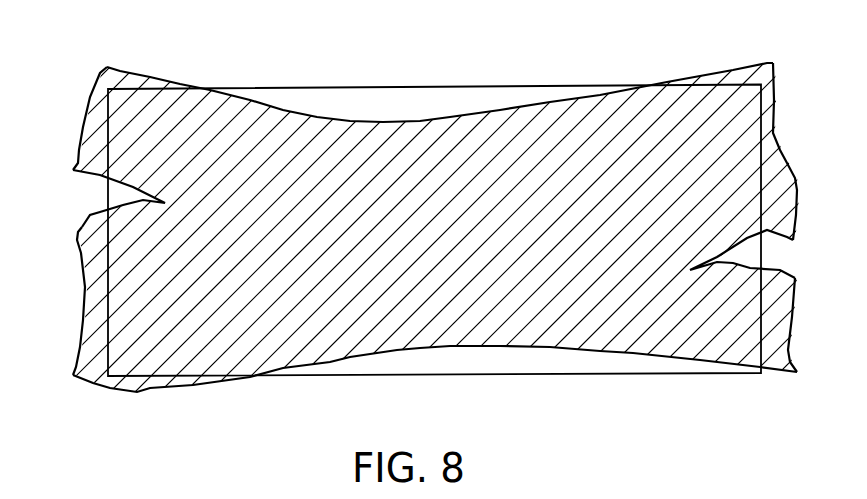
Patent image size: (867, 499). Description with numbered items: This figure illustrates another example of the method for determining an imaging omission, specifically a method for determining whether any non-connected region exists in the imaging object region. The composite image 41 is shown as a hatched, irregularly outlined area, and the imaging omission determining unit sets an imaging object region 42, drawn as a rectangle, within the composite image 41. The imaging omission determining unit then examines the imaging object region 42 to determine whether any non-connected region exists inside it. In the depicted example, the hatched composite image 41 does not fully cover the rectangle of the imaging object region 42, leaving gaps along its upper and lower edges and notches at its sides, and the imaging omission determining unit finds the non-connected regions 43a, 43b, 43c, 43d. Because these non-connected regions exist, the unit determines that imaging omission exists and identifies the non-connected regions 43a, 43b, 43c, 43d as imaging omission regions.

The composite image 41 is at (738, 65).
The imaging object region 42 is at (390, 86).
The non-connected region 43a is at (495, 95).
The non-connected region 43b is at (747, 250).
The non-connected region 43c is at (503, 362).
The non-connected region 43d is at (120, 193).